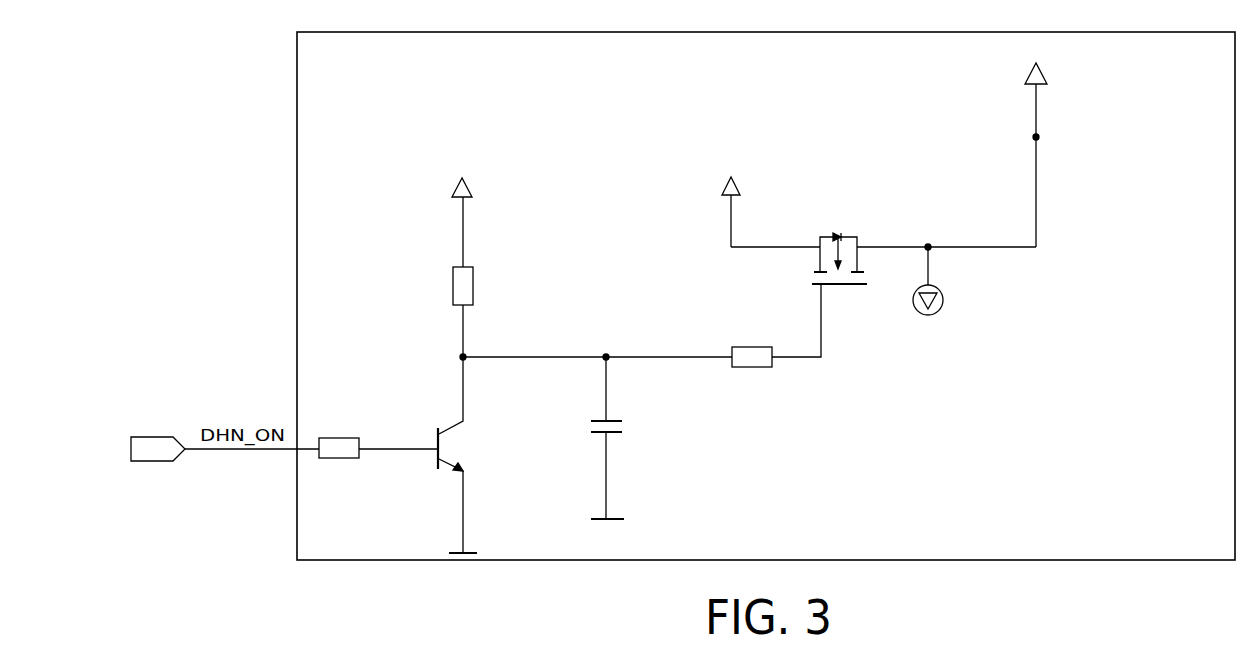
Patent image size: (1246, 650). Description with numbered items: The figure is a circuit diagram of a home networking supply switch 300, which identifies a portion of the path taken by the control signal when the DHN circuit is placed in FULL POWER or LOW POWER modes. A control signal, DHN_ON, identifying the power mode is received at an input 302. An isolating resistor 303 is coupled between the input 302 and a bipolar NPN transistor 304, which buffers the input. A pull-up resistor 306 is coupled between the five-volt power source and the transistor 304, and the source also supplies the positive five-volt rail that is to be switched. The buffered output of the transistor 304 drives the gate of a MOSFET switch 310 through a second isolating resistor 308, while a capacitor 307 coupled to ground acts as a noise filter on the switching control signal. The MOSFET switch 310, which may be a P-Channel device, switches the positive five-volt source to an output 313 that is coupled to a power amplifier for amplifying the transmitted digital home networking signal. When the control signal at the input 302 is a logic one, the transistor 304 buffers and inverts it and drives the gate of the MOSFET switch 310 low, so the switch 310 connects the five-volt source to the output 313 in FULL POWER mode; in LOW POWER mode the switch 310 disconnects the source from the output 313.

The home networking supply switch 300 is at (766, 296).
The input 302 is at (152, 462).
The isolating resistor 303 is at (339, 459).
The bipolar transistor 304 is at (466, 447).
The pull-up resistor 306 is at (452, 285).
The capacitor 307 is at (616, 434).
The isolating resistor 308 is at (752, 345).
The MOSFET switch 310 is at (853, 237).
The output 313 is at (1040, 88).